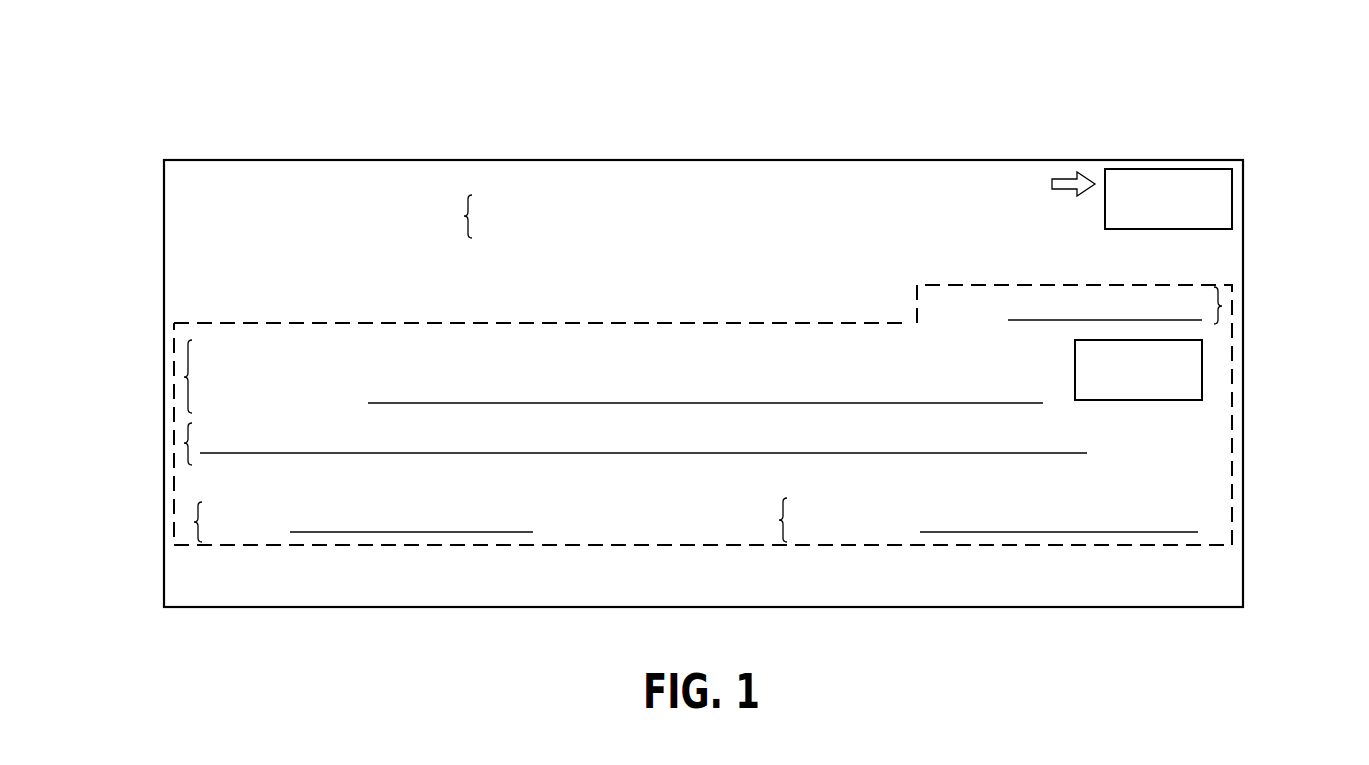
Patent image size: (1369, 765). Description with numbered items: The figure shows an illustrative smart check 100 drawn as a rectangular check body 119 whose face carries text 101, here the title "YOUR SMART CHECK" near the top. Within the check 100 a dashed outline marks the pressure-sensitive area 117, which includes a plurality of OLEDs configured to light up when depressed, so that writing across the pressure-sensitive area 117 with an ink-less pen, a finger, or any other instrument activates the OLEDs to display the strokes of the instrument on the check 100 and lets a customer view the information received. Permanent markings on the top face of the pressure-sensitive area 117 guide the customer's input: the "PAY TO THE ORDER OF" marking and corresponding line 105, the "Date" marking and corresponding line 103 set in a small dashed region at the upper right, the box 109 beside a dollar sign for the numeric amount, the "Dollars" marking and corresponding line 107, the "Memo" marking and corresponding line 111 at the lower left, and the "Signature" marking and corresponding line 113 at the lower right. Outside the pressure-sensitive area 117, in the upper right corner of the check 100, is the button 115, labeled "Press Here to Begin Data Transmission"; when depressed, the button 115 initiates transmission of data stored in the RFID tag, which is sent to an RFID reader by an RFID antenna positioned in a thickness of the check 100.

The check 100 is at (116, 84).
The text 101 is at (464, 216).
The Date line 103 is at (1222, 306).
The PAY TO THE ORDER OF line 105 is at (184, 377).
The Dollars line 107 is at (184, 443).
The box 109 is at (1202, 363).
The Memo line 111 is at (194, 522).
The Signature line 113 is at (779, 520).
The button 115 is at (1185, 169).
The pressure-sensitive area 117 is at (1197, 547).
The check body 119 is at (164, 241).